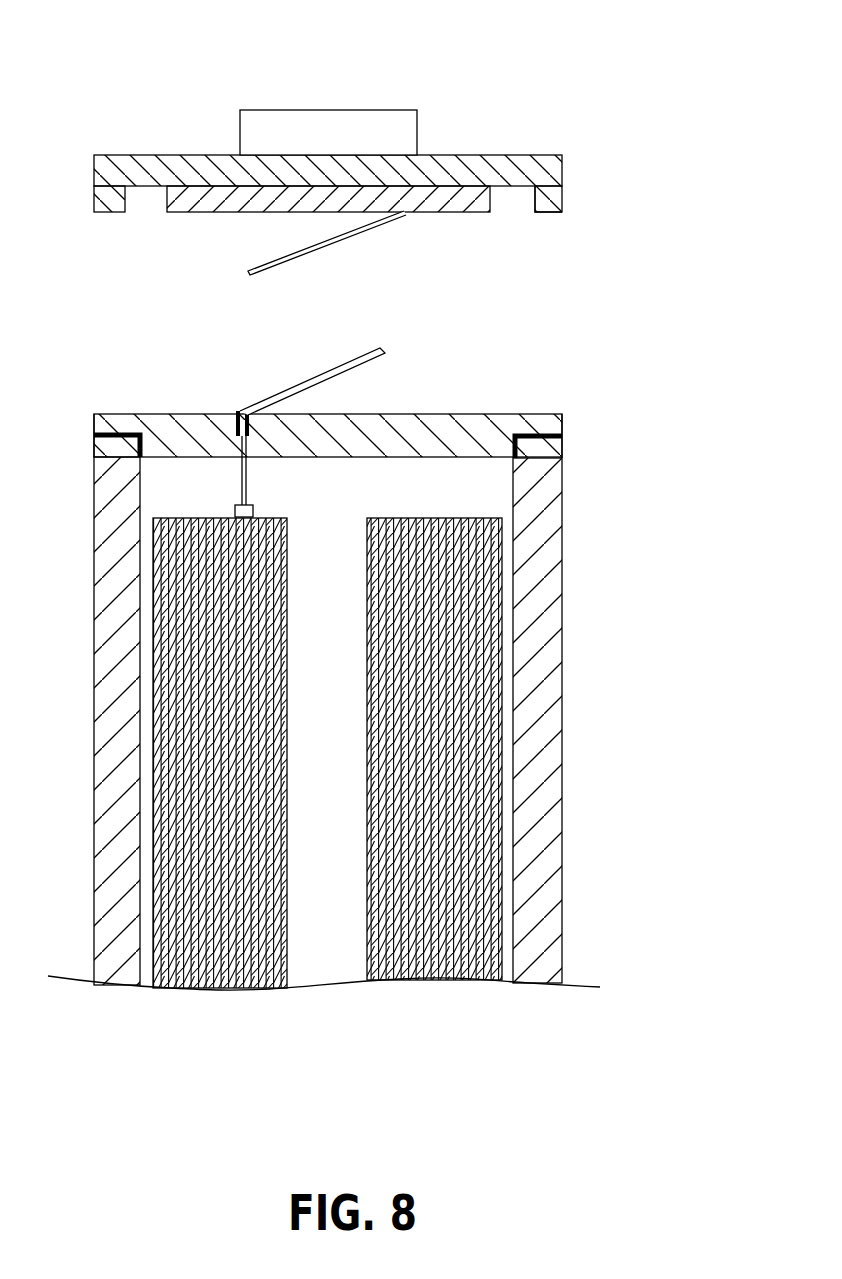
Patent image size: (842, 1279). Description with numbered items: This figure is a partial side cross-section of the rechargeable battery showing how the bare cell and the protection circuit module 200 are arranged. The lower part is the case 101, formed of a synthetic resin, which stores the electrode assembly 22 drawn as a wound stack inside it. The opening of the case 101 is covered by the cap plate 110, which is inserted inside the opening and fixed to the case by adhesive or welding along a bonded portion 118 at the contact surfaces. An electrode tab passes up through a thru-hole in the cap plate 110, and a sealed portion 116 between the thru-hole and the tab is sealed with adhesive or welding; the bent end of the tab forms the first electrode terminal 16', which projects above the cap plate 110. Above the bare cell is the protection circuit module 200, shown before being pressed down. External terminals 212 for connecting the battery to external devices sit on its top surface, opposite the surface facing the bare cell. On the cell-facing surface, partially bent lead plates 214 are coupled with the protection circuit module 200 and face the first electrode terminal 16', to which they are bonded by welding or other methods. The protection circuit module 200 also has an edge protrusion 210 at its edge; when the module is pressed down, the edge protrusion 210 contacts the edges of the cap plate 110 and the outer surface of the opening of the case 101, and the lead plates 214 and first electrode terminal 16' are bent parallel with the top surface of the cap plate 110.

The protection circuit module 200 is at (505, 168).
The external terminals 212 is at (288, 120).
The edge protrusion 210 is at (548, 213).
The lead plates 214 is at (335, 238).
The case 101 is at (548, 763).
The cap plate 110 is at (444, 424).
The bonded portion 118 is at (562, 415).
The sealed portion 116 is at (235, 412).
The first electrode terminal 16' is at (283, 371).
The electrode assembly 22 is at (505, 636).